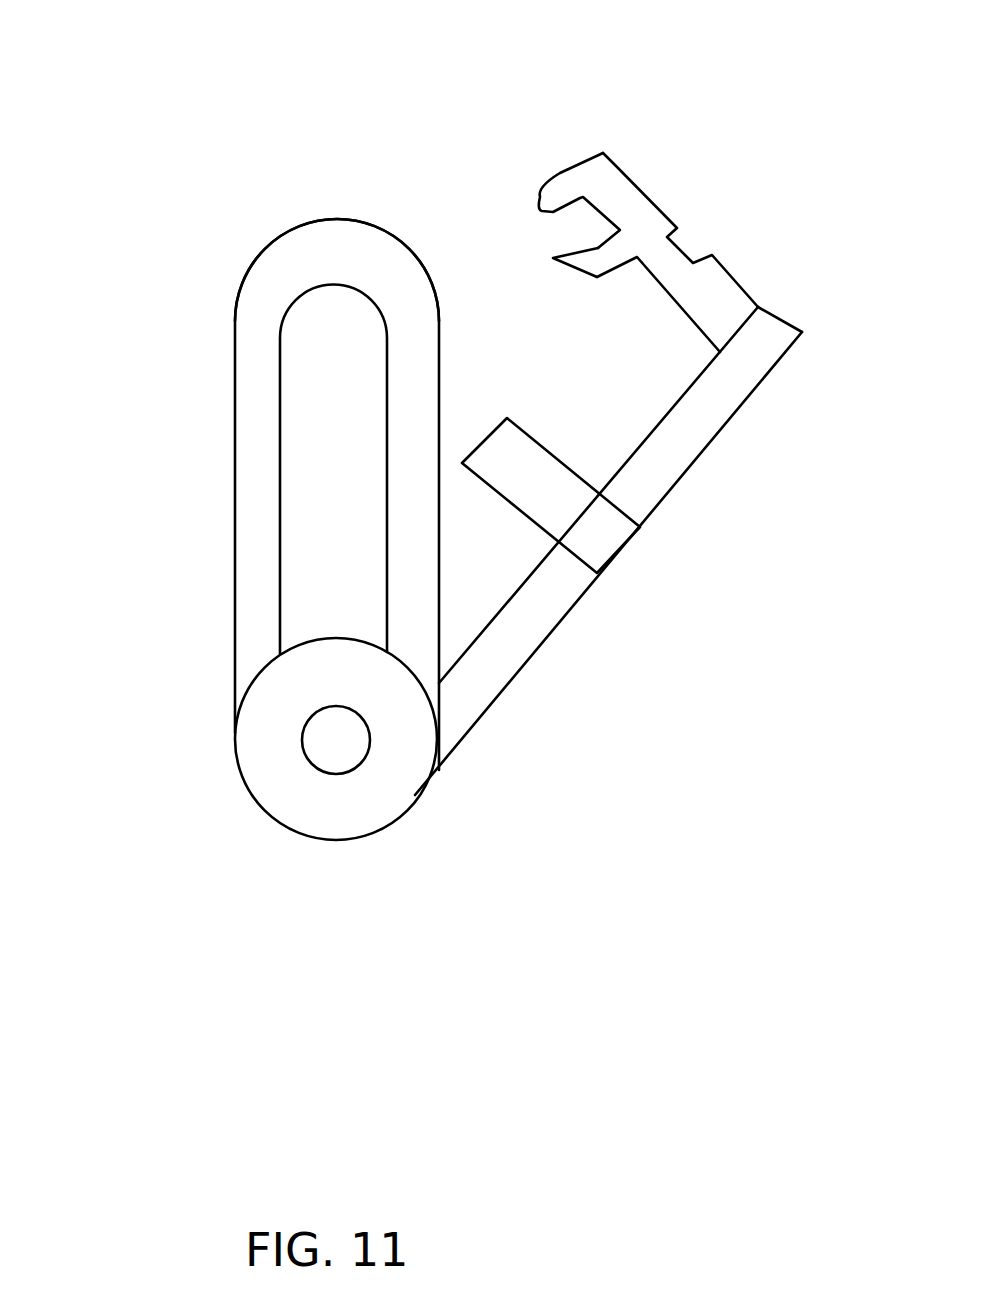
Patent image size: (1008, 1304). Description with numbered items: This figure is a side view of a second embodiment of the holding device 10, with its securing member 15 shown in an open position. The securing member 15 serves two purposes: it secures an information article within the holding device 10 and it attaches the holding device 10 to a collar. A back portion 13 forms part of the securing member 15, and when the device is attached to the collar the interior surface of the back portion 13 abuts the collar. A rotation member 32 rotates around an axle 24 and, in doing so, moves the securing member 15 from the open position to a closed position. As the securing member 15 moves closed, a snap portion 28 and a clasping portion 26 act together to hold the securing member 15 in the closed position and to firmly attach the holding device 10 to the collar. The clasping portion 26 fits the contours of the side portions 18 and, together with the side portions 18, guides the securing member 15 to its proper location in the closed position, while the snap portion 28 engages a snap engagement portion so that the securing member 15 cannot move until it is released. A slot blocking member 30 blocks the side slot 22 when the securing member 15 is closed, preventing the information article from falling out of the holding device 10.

The holding device 10 is at (165, 200).
The back portion 13 is at (698, 433).
The securing member 15 is at (790, 240).
The side portions 18 is at (257, 538).
The side slot 22 is at (348, 330).
The axle 24 is at (340, 733).
The clasping portion 26 is at (615, 170).
The snap portion 28 is at (598, 273).
The slot blocking member 30 is at (535, 497).
The rotation member 32 is at (287, 775).